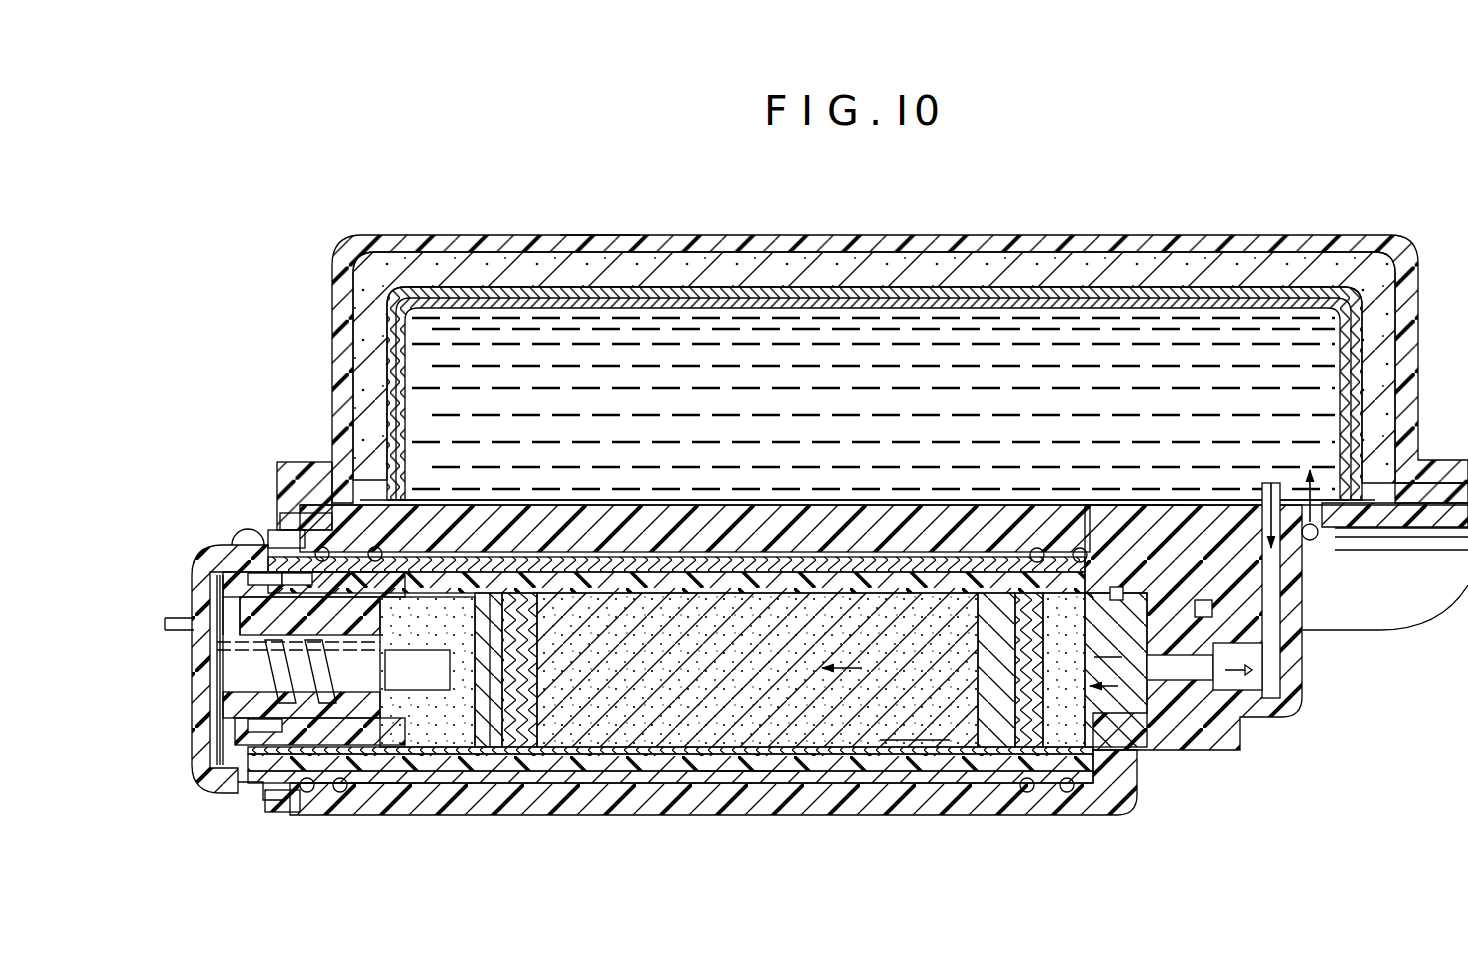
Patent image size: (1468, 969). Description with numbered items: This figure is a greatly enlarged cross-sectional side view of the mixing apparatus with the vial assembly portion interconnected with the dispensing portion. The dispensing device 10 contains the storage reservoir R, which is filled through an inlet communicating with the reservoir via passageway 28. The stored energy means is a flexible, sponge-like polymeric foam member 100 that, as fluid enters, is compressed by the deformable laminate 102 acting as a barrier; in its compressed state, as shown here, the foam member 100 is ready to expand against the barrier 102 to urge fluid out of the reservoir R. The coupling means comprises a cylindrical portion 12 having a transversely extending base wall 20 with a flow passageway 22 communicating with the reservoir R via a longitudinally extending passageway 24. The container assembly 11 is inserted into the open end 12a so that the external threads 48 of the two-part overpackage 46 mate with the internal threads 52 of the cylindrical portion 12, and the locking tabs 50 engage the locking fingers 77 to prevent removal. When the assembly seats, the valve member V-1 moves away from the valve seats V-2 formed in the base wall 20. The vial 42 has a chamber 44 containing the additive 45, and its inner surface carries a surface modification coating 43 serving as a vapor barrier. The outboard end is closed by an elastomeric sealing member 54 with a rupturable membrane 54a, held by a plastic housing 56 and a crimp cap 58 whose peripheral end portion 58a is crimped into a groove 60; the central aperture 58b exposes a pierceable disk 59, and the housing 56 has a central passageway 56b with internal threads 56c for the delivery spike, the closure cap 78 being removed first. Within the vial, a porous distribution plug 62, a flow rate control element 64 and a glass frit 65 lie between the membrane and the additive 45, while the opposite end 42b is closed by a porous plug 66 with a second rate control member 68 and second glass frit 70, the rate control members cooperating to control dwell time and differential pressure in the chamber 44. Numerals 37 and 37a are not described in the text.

The dispensing device 10 is at (1036, 214).
The cover 37 is at (440, 228).
The cover outer wall 37a is at (597, 235).
The foam member 100 is at (1210, 280).
The deformable laminate 102 is at (395, 350).
The reservoir R is at (912, 320).
The longitudinally extending passageway 24 is at (830, 512).
The base wall 20 is at (1182, 530).
The vial 42 is at (652, 557).
The opposite end of vial 42b is at (1105, 760).
The external threads 48 is at (1082, 550).
The additive 45 is at (778, 668).
The chamber 44 is at (828, 600).
The surface modification coating 43 is at (912, 752).
The porous distribution plug 62 is at (470, 672).
The flow rate control element 64 is at (495, 642).
The glass frit 65 is at (523, 705).
The porous plug 66 is at (1050, 635).
The second rate control member 68 is at (1022, 660).
The second glass frit 70 is at (990, 695).
The rupturable membrane 54a is at (405, 690).
The plastic housing 56 is at (385, 620).
The central passageway 56b is at (238, 650).
The internal threads 56c is at (322, 672).
The crimp cap 58 is at (212, 727).
The peripheral end portion 58a is at (248, 542).
The central aperture 58b is at (215, 692).
The pierceable disk 59 is at (196, 752).
The groove 60 is at (266, 790).
The closure cap 78 is at (174, 617).
The system interlock stops 50 is at (267, 538).
The locking fingers 77 is at (284, 528).
The overpackage 46 is at (637, 768).
The container assembly 11 is at (742, 773).
The cylindrical portion 12 is at (546, 817).
The open end 12a is at (290, 806).
The elastomeric sealing member 54 is at (343, 733).
The internal threads 52 is at (1062, 800).
The flow passageway 22 is at (1280, 603).
The valve member V-1 is at (1270, 657).
The valve seat V-2 is at (1198, 618).
The passageway 28 is at (1320, 548).